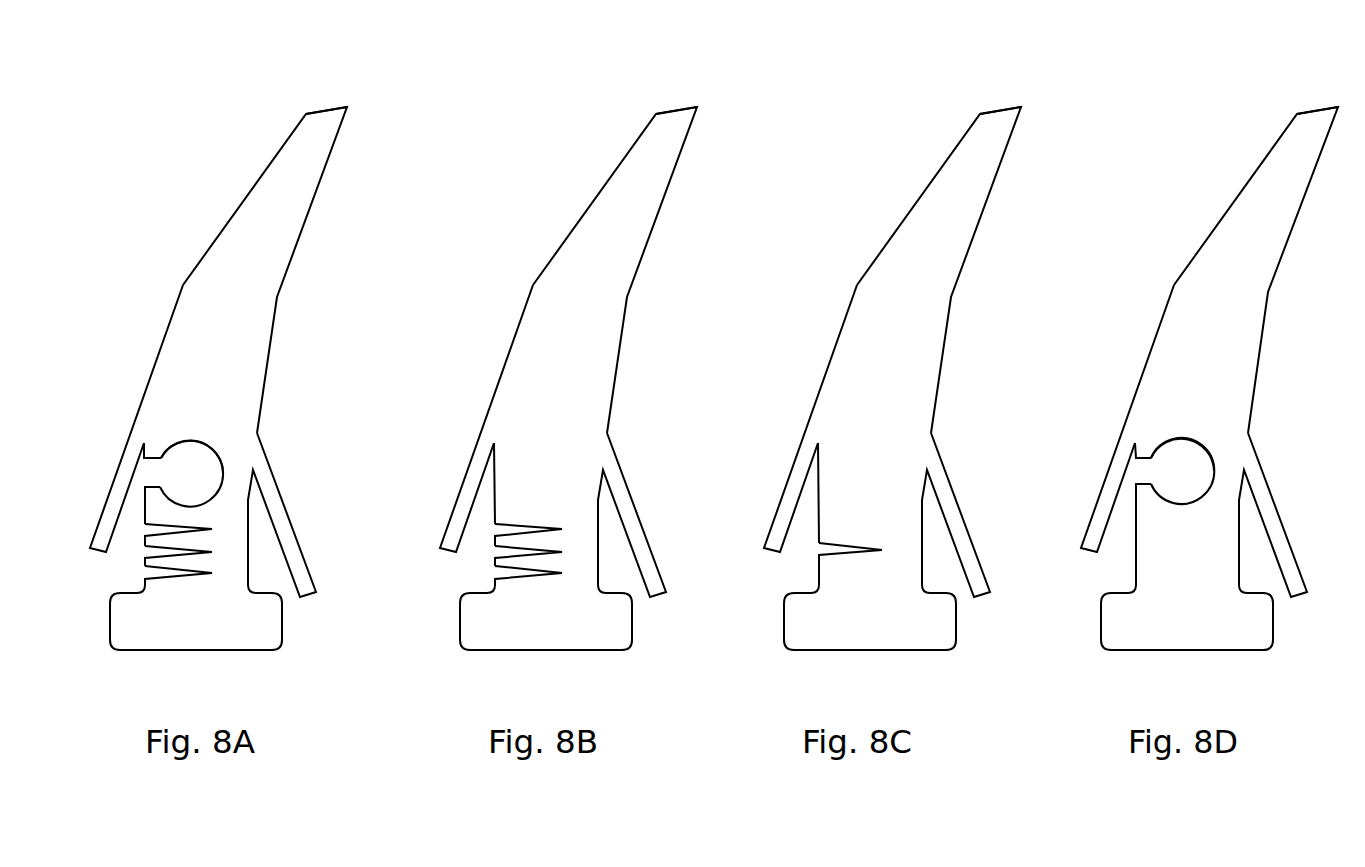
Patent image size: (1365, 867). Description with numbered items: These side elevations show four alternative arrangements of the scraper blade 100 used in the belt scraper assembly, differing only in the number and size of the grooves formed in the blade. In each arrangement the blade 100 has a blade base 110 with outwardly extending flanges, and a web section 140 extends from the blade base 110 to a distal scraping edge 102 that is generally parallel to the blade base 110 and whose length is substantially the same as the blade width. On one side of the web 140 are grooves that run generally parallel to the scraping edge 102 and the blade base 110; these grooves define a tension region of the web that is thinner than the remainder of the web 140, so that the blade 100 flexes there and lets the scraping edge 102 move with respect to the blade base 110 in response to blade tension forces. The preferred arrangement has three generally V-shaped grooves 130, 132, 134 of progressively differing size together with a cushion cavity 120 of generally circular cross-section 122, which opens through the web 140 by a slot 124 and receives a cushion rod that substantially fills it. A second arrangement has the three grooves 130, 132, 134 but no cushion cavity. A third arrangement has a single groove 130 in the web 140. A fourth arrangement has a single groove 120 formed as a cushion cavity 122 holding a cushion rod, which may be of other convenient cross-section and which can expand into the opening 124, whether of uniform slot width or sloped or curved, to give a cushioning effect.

In FIG. 8A, the blade 100 is at (222, 224).
In FIG. 8B, the blade 100 is at (574, 223).
In FIG. 8C, the blade 100 is at (897, 223).
In FIG. 8D, the blade 100 is at (1216, 221).
In FIG. 8A, the scraping edge 102 is at (347, 107).
In FIG. 8B, the scraping edge 102 is at (697, 107).
In FIG. 8C, the scraping edge 102 is at (1021, 107).
In FIG. 8D, the scraping edge 102 is at (1338, 105).
In FIG. 8A, the blade base 110 is at (167, 650).
In FIG. 8B, the blade base 110 is at (518, 650).
In FIG. 8C, the blade base 110 is at (842, 650).
In FIG. 8D, the blade base 110 is at (1160, 647).
In FIG. 8A, the cushion cavity 120 is at (204, 444).
In FIG. 8D, the cushion cavity 120 is at (1194, 441).
In FIG. 8A, the circular cross-section 122 is at (182, 438).
In FIG. 8D, the circular cross-section 122 is at (1173, 435).
In FIG. 8A, the slot 124 is at (147, 473).
In FIG. 8D, the slot 124 is at (1140, 470).
In FIG. 8A, the groove 130 is at (145, 532).
In FIG. 8B, the groove 130 is at (496, 530).
In FIG. 8A, the groove 132 is at (145, 550).
In FIG. 8B, the groove 132 is at (495, 551).
In FIG. 8C, the groove 132 is at (818, 552).
In FIG. 8A, the groove 134 is at (145, 573).
In FIG. 8B, the groove 134 is at (498, 573).
In FIG. 8A, the web section 140 is at (155, 368).
In FIG. 8B, the web section 140 is at (502, 383).
In FIG. 8C, the web section 140 is at (825, 383).
In FIG. 8D, the web section 140 is at (1147, 360).